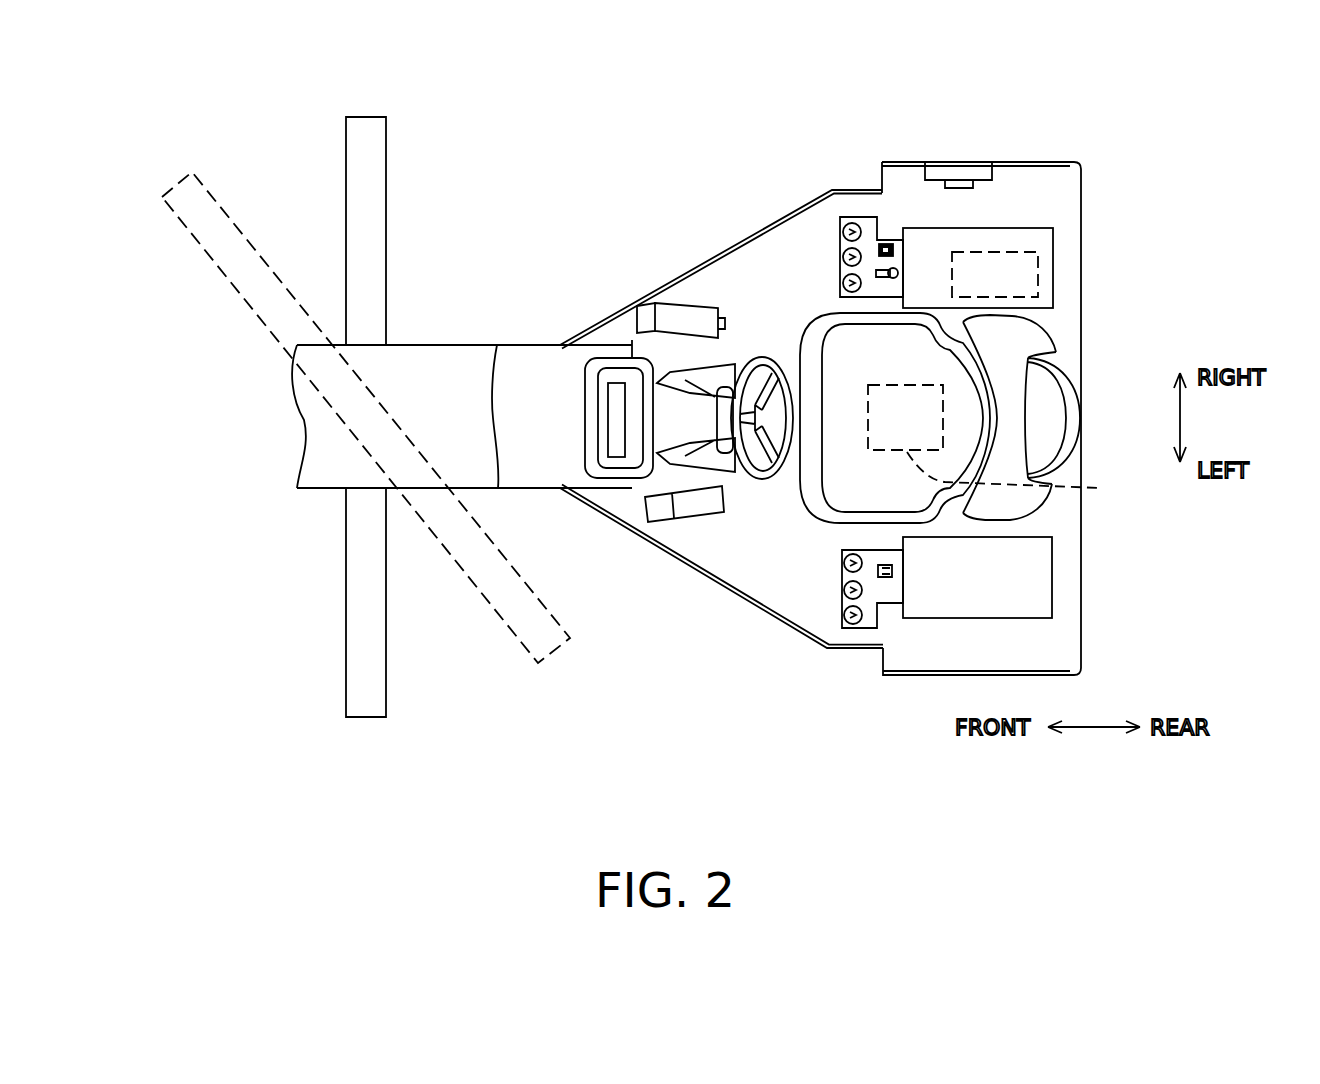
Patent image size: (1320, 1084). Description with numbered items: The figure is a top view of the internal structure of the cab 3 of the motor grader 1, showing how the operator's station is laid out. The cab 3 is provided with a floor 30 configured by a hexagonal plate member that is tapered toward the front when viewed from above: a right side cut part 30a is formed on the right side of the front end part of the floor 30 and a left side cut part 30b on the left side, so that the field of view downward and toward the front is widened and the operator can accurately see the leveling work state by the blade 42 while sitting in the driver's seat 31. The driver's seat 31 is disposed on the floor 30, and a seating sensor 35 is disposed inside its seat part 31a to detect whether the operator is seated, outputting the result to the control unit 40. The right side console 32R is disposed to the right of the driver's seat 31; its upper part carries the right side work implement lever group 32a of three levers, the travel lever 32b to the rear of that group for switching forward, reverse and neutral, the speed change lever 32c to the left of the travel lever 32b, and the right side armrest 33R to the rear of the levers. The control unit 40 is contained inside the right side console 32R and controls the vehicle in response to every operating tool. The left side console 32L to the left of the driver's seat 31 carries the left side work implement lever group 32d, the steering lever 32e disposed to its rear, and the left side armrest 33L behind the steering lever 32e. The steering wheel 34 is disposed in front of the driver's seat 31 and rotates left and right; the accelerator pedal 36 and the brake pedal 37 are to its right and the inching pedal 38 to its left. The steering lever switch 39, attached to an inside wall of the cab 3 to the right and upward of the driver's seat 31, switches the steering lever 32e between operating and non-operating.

The motor grader 1 is at (1151, 177).
The cab 3 is at (1082, 192).
The floor 30 is at (721, 418).
The right side cut part 30a is at (712, 256).
The left side cut part 30b is at (700, 580).
The driver's seat 31 is at (946, 396).
The seat part 31a is at (820, 322).
The right side work implement lever group 32a is at (962, 208).
The right side console 32R is at (991, 223).
The travel lever 32b is at (884, 243).
The speed change lever 32c is at (897, 273).
The left side console 32L is at (858, 663).
The left side work implement lever group 32d is at (873, 626).
The steering lever 32e is at (885, 578).
The right side armrest 33R is at (1034, 260).
The left side armrest 33L is at (1052, 570).
The steering wheel 34 is at (765, 480).
The seating sensor 35 is at (1010, 421).
The accelerator pedal 36 is at (672, 303).
The brake pedal 37 is at (632, 340).
The inching pedal 38 is at (652, 522).
The steering lever switch 39 is at (972, 190).
The control unit 40 is at (1022, 253).
The blade 42 is at (386, 185).